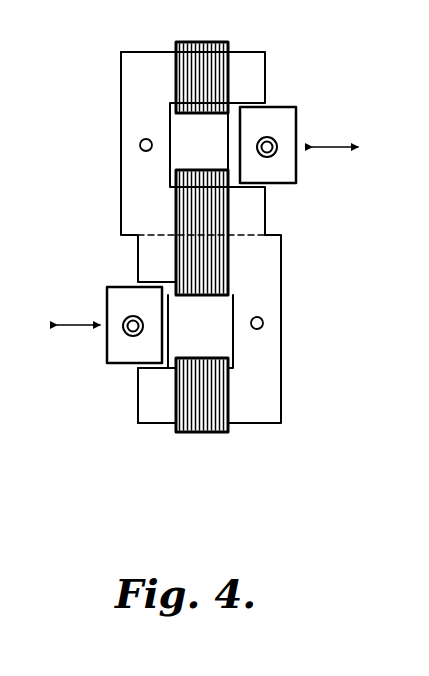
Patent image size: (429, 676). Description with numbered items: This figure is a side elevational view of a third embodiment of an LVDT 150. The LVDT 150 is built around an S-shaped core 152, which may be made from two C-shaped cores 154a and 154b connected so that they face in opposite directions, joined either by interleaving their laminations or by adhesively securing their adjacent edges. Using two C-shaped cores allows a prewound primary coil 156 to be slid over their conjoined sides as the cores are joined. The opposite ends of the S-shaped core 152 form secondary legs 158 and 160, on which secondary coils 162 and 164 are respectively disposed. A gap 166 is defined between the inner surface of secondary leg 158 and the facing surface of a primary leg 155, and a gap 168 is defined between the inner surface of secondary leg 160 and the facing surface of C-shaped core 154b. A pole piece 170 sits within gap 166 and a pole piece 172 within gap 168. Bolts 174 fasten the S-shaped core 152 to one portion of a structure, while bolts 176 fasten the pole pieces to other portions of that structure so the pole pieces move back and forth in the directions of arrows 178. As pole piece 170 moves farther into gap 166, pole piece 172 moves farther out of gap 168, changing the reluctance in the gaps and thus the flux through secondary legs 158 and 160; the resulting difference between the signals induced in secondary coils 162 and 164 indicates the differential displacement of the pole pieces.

The LVDT 150 is at (110, 414).
The S-shaped core 152 is at (120, 110).
The C-shaped core 154a is at (252, 212).
The C-shaped core 154b is at (263, 245).
The primary leg 155 is at (130, 222).
The primary coil 156 is at (218, 270).
The secondary leg 158 is at (252, 63).
The secondary leg 160 is at (153, 418).
The secondary coil 162 is at (200, 43).
The secondary coil 164 is at (220, 417).
The gap 166 is at (238, 100).
The gap 168 is at (167, 282).
The pole piece 170 is at (287, 120).
The pole piece 172 is at (123, 333).
The bolts 174 is at (140, 145).
The bolts 176 is at (277, 150).
The arrows 178 is at (333, 145).